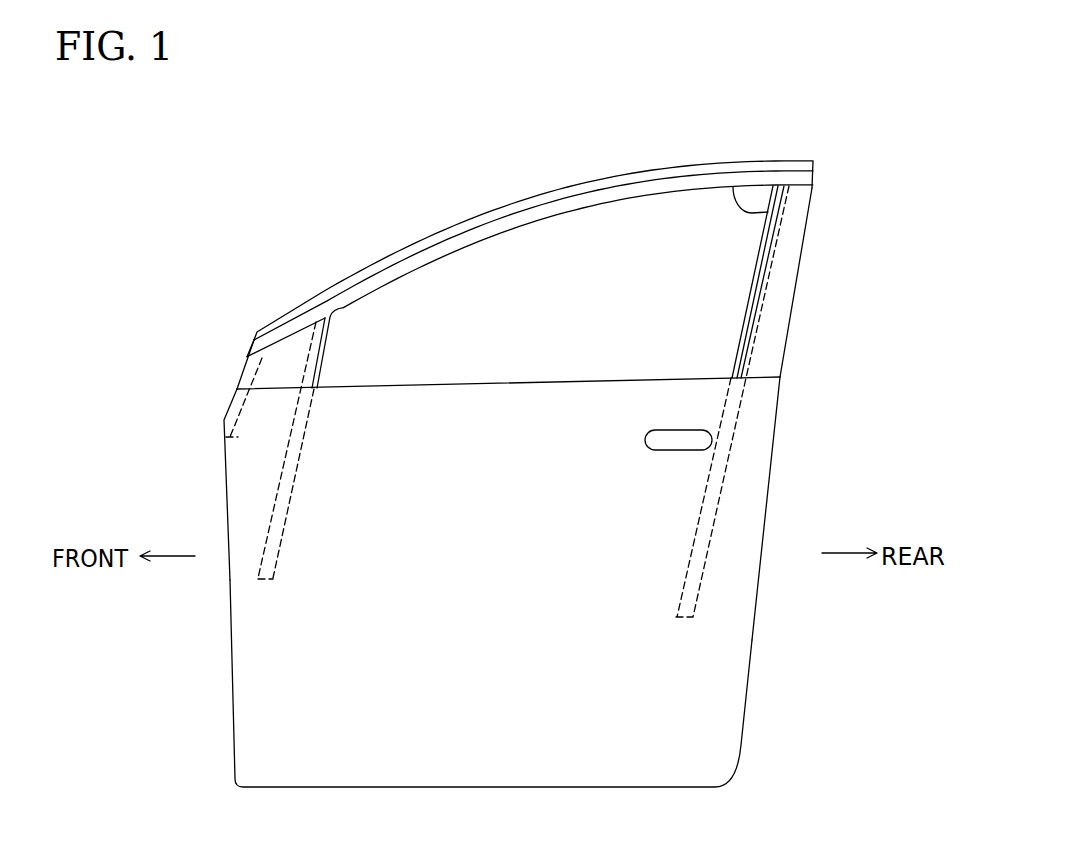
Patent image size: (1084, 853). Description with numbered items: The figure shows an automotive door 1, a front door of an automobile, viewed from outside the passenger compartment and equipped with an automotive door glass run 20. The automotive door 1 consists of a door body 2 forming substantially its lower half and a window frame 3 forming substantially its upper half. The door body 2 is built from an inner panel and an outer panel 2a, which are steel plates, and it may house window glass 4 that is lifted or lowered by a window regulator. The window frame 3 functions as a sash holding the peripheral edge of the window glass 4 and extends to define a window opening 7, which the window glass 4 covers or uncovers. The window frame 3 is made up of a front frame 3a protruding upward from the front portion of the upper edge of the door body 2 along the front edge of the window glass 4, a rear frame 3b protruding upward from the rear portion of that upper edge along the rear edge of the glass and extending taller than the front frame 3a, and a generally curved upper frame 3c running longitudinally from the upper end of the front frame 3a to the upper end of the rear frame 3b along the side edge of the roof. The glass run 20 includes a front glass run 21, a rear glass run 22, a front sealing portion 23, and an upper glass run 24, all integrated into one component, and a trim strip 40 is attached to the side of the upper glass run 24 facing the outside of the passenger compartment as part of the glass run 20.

The automotive door 1 is at (169, 636).
The door body 2 is at (221, 692).
The outer panel 2a is at (250, 744).
The window frame 3 is at (354, 263).
The front frame 3a is at (320, 300).
The rear frame 3b is at (767, 322).
The upper frame 3c is at (677, 168).
The window glass 4 is at (748, 270).
The window opening 7 is at (752, 212).
The automotive door glass run 20 is at (575, 174).
The front glass run 21 is at (322, 371).
The rear glass run 22 is at (738, 342).
The front sealing portion 23 is at (236, 373).
The upper glass run 24 is at (441, 247).
The trim strip 40 is at (512, 212).